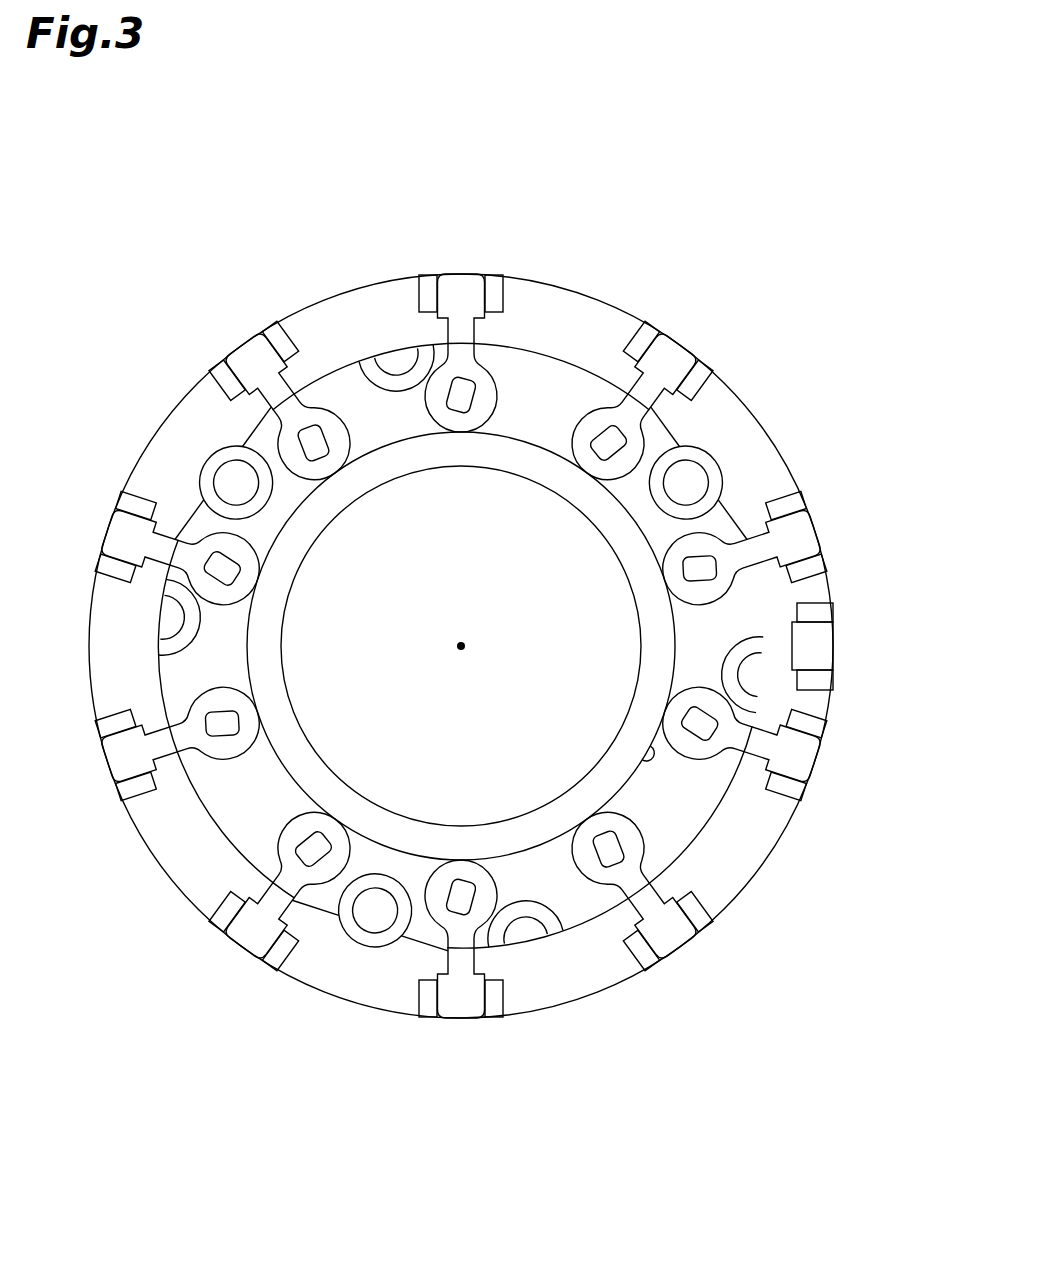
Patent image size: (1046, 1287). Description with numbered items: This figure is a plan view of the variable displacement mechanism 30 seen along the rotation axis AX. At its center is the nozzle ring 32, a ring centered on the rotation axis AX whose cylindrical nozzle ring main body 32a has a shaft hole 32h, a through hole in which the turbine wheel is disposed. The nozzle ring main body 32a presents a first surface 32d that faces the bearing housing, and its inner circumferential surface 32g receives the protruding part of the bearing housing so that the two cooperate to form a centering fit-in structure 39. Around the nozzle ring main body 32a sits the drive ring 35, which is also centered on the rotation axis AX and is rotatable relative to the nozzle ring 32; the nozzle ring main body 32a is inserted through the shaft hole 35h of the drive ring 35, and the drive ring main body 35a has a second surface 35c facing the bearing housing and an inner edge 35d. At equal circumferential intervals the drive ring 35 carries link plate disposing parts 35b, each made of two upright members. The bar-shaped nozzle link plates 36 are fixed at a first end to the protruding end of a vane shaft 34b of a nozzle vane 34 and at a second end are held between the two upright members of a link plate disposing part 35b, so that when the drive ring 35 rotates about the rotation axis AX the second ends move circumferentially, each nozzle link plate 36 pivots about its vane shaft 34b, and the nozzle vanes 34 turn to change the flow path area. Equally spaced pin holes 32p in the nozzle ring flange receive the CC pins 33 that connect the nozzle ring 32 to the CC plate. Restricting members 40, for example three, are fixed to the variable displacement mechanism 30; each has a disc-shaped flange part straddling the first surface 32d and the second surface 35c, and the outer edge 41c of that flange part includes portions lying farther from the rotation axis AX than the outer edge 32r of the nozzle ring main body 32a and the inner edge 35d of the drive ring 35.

The variable displacement mechanism 30 is at (668, 186).
The nozzle ring 32 is at (469, 669).
The nozzle ring main body 32a is at (586, 382).
The first surface 32d is at (556, 398).
The inner circumferential surface 32g is at (645, 754).
The shaft hole 32h is at (641, 628).
The pin holes 32p is at (404, 352).
The outer edge 32r is at (408, 947).
The CC pins 33 is at (444, 362).
The nozzle vanes 34 is at (460, 547).
The vane shaft 34b is at (315, 422).
The drive ring 35 is at (434, 653).
The drive ring main body 35a is at (197, 852).
The link plate disposing parts 35b is at (263, 937).
The second surface 35c is at (728, 410).
The inner edge 35d is at (343, 937).
The shaft hole 35h is at (517, 362).
The nozzle link plates 36 is at (253, 350).
The fit-in structure 39 is at (772, 825).
The restricting members 40 is at (725, 472).
The outer edge 41c is at (357, 940).
The rotation axis AX is at (466, 650).